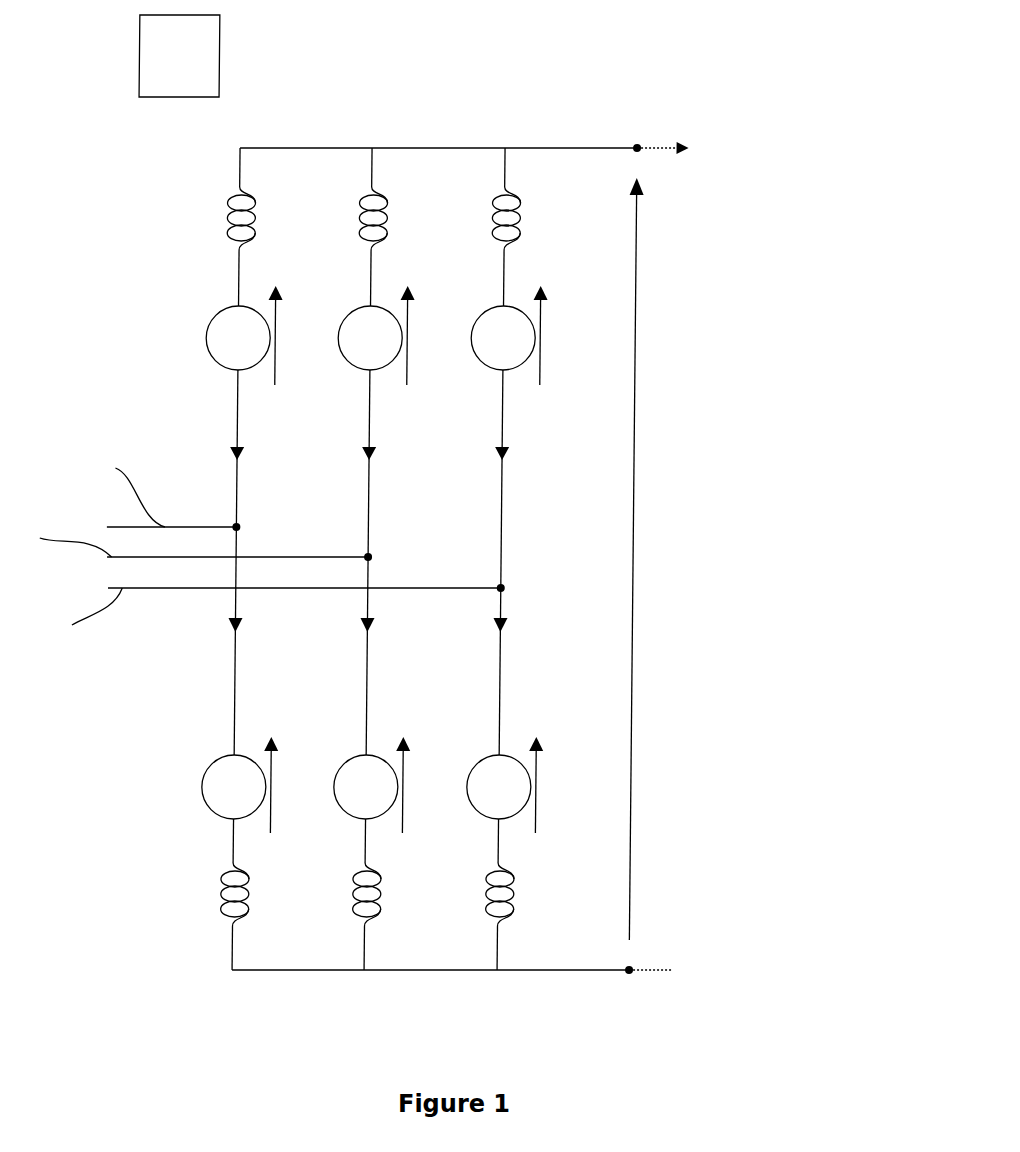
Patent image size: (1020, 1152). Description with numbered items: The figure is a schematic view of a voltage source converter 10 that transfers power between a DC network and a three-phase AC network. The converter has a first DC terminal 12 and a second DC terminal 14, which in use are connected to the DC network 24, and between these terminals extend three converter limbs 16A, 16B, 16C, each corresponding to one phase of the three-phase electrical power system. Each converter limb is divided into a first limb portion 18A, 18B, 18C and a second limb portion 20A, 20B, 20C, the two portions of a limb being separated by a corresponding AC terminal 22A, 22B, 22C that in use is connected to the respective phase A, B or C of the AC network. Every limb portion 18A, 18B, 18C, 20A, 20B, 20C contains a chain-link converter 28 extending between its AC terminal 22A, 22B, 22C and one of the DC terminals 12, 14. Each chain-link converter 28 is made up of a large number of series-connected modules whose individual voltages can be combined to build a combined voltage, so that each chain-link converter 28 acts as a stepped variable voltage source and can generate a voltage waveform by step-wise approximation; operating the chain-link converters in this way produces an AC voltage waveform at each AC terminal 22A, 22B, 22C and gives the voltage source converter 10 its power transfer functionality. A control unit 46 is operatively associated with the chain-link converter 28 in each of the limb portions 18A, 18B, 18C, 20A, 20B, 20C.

The voltage source converter 10 is at (813, 132).
The first DC terminal 12 is at (638, 148).
The second DC terminal 14 is at (638, 975).
The converter limb 16A is at (241, 125).
The converter limb 16B is at (373, 128).
The converter limb 16C is at (506, 135).
The first limb portion 18A is at (205, 246).
The first limb portion 18B is at (347, 259).
The first limb portion 18C is at (484, 267).
The second limb portion 20A is at (180, 877).
The second limb portion 20B is at (338, 870).
The second limb portion 20C is at (473, 872).
The AC terminal 22A is at (242, 527).
The AC terminal 22B is at (374, 557).
The AC terminal 22C is at (506, 588).
The DC network 24 is at (840, 528).
The chain-link converter 28 is at (254, 352).
The control unit 46 is at (197, 72).